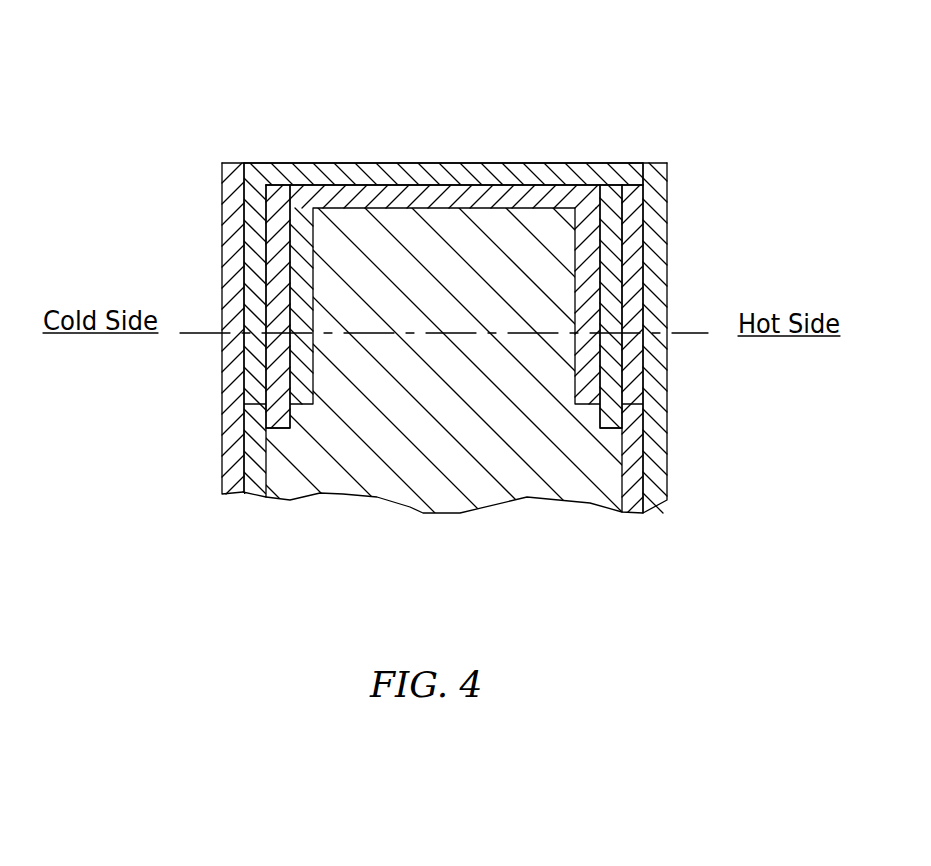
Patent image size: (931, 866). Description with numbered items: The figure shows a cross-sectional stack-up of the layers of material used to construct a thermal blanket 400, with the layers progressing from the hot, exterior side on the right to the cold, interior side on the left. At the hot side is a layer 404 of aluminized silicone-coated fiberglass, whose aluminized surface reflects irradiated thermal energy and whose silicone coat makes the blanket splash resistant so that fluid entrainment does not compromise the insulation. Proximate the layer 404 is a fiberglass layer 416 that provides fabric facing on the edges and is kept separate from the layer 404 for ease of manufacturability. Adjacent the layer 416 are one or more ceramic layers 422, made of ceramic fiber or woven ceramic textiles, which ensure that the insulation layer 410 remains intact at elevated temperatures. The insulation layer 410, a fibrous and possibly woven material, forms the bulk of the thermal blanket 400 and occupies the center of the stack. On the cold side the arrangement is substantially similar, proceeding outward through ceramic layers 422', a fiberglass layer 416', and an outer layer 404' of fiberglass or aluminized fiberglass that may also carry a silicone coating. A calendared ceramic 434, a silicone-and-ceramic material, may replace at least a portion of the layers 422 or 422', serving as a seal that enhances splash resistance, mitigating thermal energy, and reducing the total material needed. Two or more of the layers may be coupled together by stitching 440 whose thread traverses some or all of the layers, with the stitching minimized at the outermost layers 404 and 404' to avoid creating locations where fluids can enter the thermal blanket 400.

The thermal blanket 400 is at (566, 100).
The layer 404 is at (668, 368).
The layer 404' is at (180, 330).
The insulation layer 410 is at (442, 487).
The layer 416 is at (626, 307).
The layer 416' is at (345, 330).
The layers 422 is at (552, 306).
The layers 422' is at (340, 316).
The calendared ceramic 434 is at (410, 190).
The stitching 440 is at (692, 333).